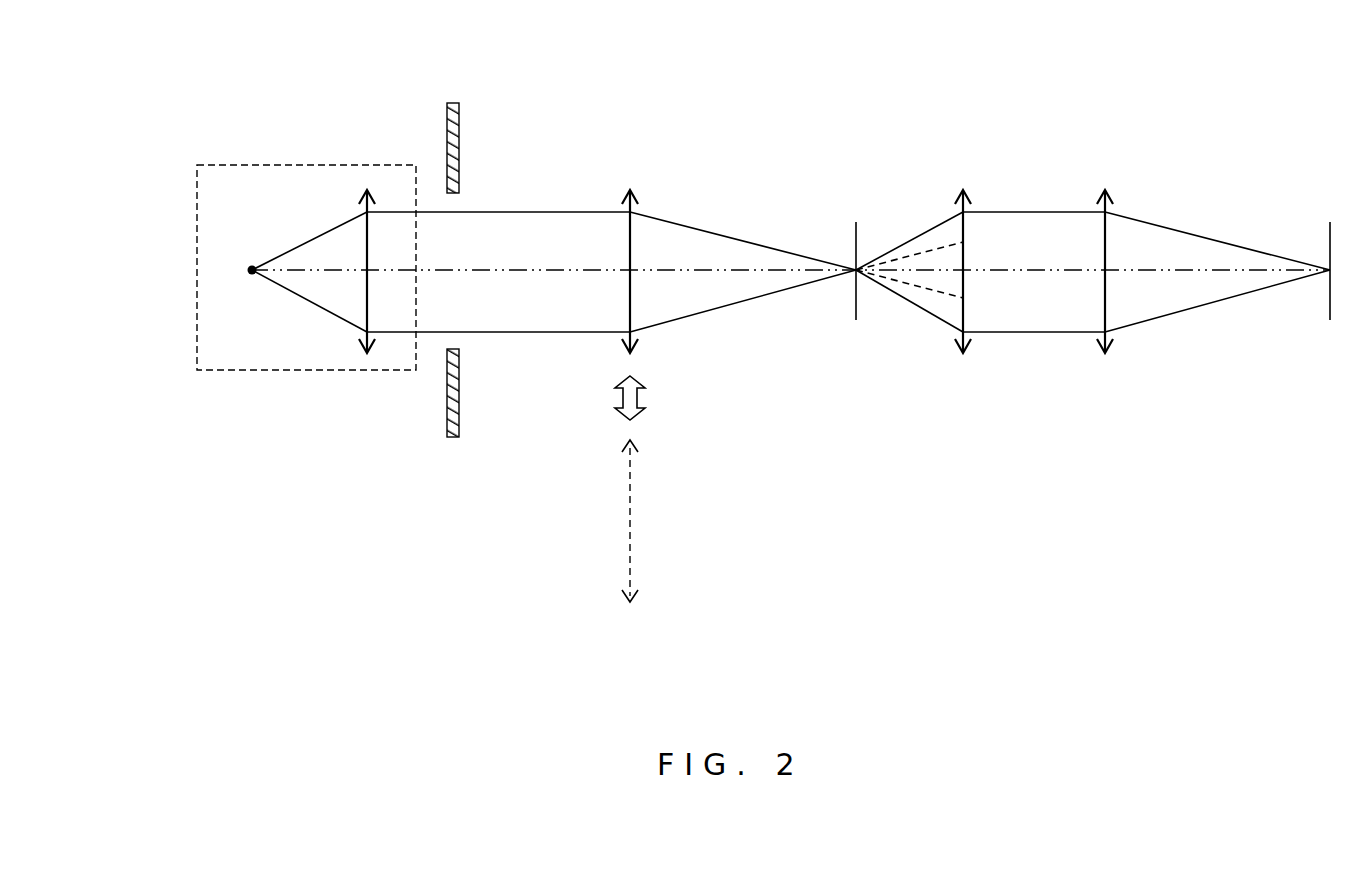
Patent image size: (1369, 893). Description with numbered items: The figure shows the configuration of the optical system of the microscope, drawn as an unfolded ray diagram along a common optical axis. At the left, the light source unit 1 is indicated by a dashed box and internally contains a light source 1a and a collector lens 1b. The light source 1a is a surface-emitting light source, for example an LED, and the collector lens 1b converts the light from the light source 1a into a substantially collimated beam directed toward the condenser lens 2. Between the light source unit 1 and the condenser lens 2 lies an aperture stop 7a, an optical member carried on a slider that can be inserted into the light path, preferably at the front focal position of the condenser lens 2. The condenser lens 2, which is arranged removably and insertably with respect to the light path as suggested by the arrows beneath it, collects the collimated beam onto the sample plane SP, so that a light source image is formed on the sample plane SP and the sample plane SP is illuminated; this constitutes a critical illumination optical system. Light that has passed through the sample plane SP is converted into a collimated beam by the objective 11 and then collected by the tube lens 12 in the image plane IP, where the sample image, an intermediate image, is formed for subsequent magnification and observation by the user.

The light source unit 1 is at (198, 218).
The light source 1a is at (252, 267).
The collector lens 1b is at (366, 237).
The aperture stop 7a is at (447, 135).
The condenser lens 2 is at (630, 247).
The sample plane SP is at (855, 237).
The objective 11 is at (962, 233).
The tube lens 12 is at (1104, 233).
The image plane IP is at (1329, 243).